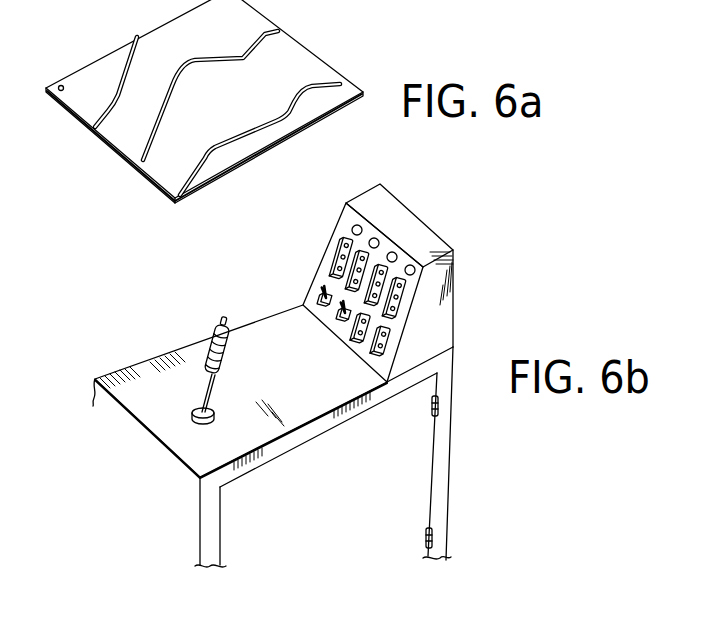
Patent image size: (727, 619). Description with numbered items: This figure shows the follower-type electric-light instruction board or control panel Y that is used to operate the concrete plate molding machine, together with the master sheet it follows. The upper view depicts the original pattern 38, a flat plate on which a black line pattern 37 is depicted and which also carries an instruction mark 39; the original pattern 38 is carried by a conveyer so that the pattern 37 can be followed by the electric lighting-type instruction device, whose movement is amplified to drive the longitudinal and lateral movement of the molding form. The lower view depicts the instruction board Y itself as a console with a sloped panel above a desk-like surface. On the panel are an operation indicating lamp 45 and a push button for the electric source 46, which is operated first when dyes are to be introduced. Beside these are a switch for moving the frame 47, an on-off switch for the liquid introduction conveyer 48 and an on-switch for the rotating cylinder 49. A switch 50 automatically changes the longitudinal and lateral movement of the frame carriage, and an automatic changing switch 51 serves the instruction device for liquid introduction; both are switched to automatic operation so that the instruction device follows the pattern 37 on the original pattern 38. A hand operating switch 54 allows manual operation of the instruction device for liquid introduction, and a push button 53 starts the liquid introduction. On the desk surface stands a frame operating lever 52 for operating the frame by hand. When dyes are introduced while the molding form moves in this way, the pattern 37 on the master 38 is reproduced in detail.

In FIG. 6a, the pattern 37 is at (206, 160).
In FIG. 6a, the original pattern 38 is at (303, 45).
In FIG. 6a, the instruction mark 39 is at (60, 84).
In FIG. 6b, the operation indicating lamp 45 is at (389, 251).
In FIG. 6b, the push button for the electric source 46 is at (404, 303).
In FIG. 6b, the switch for moving the frame 47 is at (391, 340).
In FIG. 6b, the on-off switch for the liquid introduction conveyer 48 is at (335, 248).
In FIG. 6b, the on-switch for the rotating cylinder 49 is at (330, 266).
In FIG. 6b, the automatic changing switch for longitudinal and lateral movement of the frame car 50 is at (320, 296).
In FIG. 6b, the automatic changing switch for the instruction device for liquid introduction 51 is at (341, 320).
In FIG. 6b, the frame operating lever 52 is at (224, 355).
In FIG. 6b, the push button for the liquid introduction 53 is at (226, 324).
In FIG. 6b, the hand operating switch for the instruction device for liquid introduction 54 is at (356, 336).
In FIG. 6b, the follower-type electric-light instruction board Y is at (440, 222).